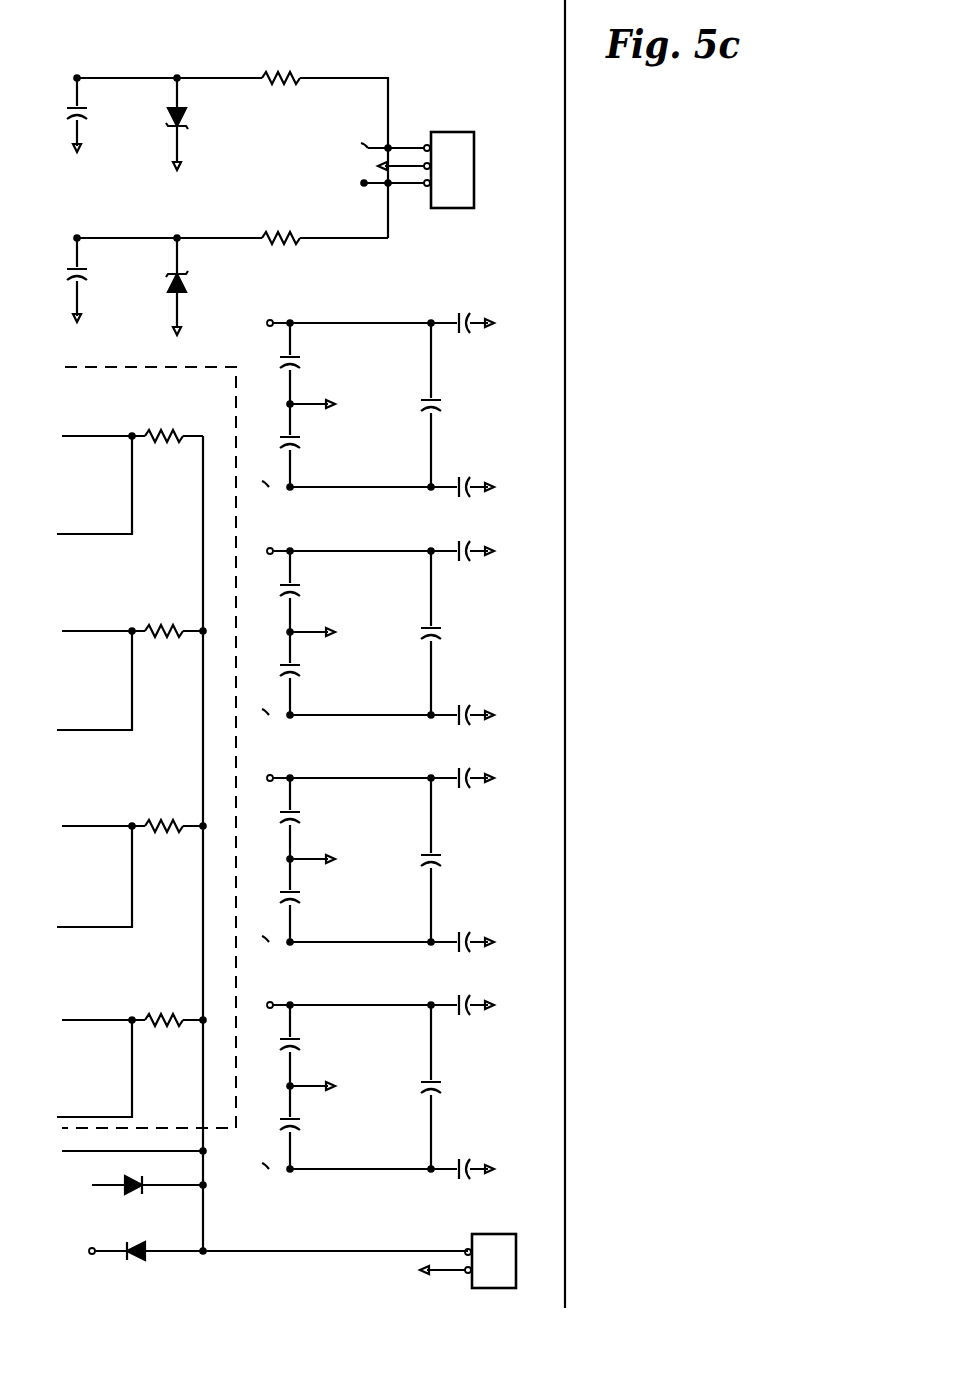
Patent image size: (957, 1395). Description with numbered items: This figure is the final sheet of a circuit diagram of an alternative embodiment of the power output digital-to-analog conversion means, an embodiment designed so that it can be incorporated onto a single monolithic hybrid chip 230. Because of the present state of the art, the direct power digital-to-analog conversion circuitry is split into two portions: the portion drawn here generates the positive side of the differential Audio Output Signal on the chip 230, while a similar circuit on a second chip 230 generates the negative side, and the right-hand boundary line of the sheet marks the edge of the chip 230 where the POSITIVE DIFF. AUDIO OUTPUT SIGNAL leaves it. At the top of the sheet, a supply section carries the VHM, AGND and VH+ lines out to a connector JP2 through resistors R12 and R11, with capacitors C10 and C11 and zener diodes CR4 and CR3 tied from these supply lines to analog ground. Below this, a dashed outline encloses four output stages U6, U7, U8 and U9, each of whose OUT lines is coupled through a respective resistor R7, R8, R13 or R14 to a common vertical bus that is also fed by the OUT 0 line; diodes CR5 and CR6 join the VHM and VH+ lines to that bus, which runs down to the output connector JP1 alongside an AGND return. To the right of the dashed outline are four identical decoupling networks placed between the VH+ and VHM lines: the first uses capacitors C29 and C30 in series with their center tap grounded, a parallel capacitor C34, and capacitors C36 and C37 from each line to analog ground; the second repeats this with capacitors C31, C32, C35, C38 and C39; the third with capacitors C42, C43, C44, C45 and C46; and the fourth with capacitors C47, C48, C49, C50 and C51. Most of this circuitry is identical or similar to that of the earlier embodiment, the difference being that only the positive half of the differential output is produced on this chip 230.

The monolithic hybrid chip 230 is at (565, 175).
The capacitor C10 is at (93, 128).
The capacitor C11 is at (94, 292).
The zener diode CR3 is at (200, 300).
The zener diode CR4 is at (193, 139).
The diode CR5 is at (122, 1177).
The diode CR6 is at (124, 1241).
The resistor R7 is at (164, 423).
The resistor R8 is at (164, 618).
The resistor R11 is at (282, 227).
The resistor R12 is at (281, 66).
The resistor R13 is at (164, 813).
The resistor R14 is at (164, 1007).
The jumper connector JP1 is at (439, 1248).
The jumper connector JP2 is at (393, 159).
The amplifier output stage U6 is at (130, 455).
The amplifier output stage U7 is at (132, 645).
The amplifier output stage U8 is at (132, 840).
The amplifier output stage U9 is at (132, 1031).
The capacitor C29 is at (313, 364).
The capacitor C30 is at (311, 444).
The capacitor C31 is at (313, 592).
The capacitor C32 is at (311, 672).
The capacitor C34 is at (454, 411).
The capacitor C35 is at (454, 639).
The capacitor C36 is at (455, 312).
The capacitor C37 is at (472, 474).
The capacitor C38 is at (455, 540).
The capacitor C39 is at (472, 702).
The capacitor C42 is at (313, 819).
The capacitor C43 is at (311, 899).
The capacitor C44 is at (454, 866).
The capacitor C45 is at (455, 767).
The capacitor C46 is at (472, 929).
The capacitor C47 is at (313, 1046).
The capacitor C48 is at (311, 1126).
The capacitor C49 is at (454, 1093).
The capacitor C50 is at (455, 994).
The capacitor C51 is at (472, 1156).